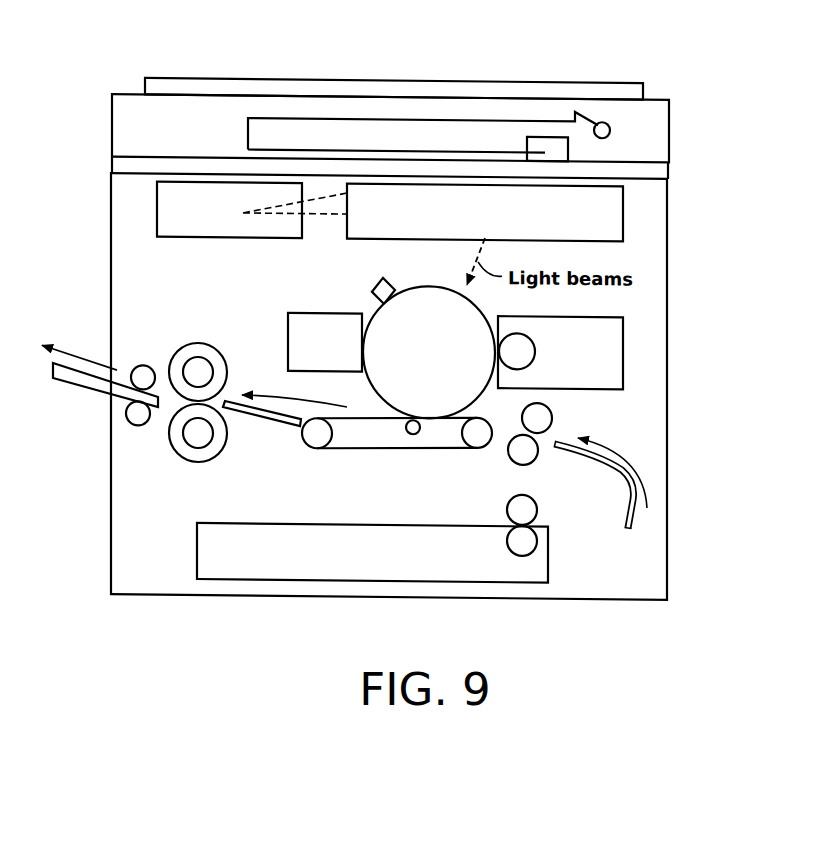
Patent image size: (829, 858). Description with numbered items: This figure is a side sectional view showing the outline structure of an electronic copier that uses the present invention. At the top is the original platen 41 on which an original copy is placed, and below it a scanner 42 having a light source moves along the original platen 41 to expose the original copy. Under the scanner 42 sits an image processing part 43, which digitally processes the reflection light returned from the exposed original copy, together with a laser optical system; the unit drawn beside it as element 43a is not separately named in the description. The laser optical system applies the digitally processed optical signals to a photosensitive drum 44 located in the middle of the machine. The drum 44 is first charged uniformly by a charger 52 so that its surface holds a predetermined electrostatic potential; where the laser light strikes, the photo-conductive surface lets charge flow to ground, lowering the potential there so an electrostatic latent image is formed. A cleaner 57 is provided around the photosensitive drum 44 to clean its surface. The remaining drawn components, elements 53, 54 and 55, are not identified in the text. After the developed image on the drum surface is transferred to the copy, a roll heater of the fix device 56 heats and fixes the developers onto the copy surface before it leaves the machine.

The original platen 41 is at (383, 80).
The scanner 42 is at (600, 120).
The image processing part 43 is at (255, 203).
The image reading unit 43a is at (592, 206).
The photosensitive drum 44 is at (457, 397).
The charger 52 is at (385, 290).
The developing unit 53 is at (623, 347).
The paper cassette 54 is at (230, 564).
The transfer belt 55 is at (377, 452).
The fix device 56 is at (170, 433).
The cleaner 57 is at (308, 343).